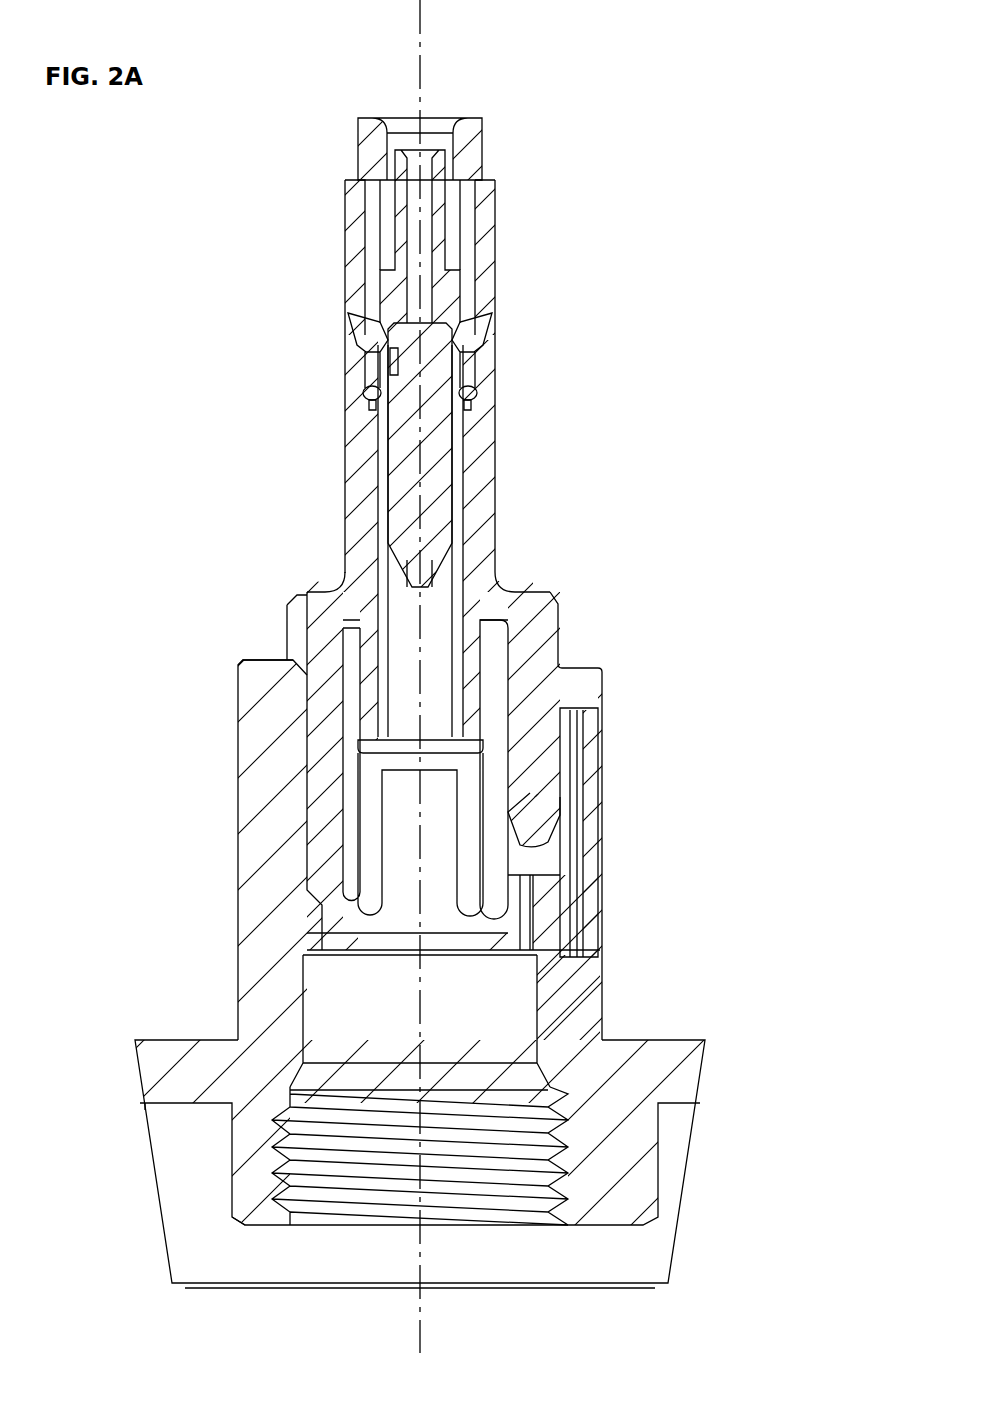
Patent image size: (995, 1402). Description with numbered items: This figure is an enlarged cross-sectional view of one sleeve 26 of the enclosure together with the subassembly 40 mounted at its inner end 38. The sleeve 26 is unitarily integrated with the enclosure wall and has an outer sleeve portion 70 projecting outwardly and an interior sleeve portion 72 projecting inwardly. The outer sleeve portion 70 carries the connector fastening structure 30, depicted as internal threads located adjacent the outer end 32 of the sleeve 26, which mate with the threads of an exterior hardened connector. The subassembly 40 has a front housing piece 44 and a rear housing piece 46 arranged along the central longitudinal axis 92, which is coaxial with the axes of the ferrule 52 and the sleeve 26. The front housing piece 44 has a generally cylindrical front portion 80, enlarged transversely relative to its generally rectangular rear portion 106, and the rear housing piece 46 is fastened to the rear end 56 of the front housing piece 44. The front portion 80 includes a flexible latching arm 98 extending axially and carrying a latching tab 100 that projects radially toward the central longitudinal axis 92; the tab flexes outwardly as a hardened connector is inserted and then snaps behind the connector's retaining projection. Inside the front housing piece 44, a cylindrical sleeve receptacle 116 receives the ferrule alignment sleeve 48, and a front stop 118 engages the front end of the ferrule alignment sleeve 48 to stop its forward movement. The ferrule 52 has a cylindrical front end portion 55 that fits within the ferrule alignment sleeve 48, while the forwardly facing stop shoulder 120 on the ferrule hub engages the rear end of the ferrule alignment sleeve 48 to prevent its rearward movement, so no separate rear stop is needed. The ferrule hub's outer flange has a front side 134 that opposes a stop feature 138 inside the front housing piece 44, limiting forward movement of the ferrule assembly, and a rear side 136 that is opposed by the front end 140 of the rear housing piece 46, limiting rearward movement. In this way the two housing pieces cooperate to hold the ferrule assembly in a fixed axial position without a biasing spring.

The central longitudinal axis 92 is at (420, 48).
The rear housing piece 46 is at (485, 128).
The rear end of the front housing piece 56 is at (340, 180).
The subassembly 40 is at (556, 325).
The rear side of the outer hub flange 136 is at (358, 332).
The front end of the rear housing piece 140 is at (492, 352).
The front side of the outer hub flange 134 is at (480, 383).
The stop feature 138 is at (472, 403).
The forwardly facing stop shoulder 120 is at (372, 432).
The rear portion of the front housing piece 106 is at (497, 450).
The cylindrical front end portion of the ferrule 55 is at (382, 485).
The ferrule 52 is at (378, 510).
The ferrule alignment sleeve 48 is at (456, 542).
The cylindrical sleeve receptacle 116 is at (373, 560).
The front housing piece 44 is at (562, 589).
The inner end of the sleeve 38 is at (241, 661).
The front portion of the front housing piece 80 is at (307, 720).
The front stop 118 is at (372, 742).
The interior sleeve portion 72 is at (237, 795).
The flexible latching arm 98 is at (560, 740).
The latching tab 100 is at (512, 815).
The outer sleeve portion 70 is at (660, 1175).
The sleeve 26 is at (231, 1221).
The outer end of the sleeve 32 is at (248, 1226).
The connector fastening structure 30 is at (568, 1218).